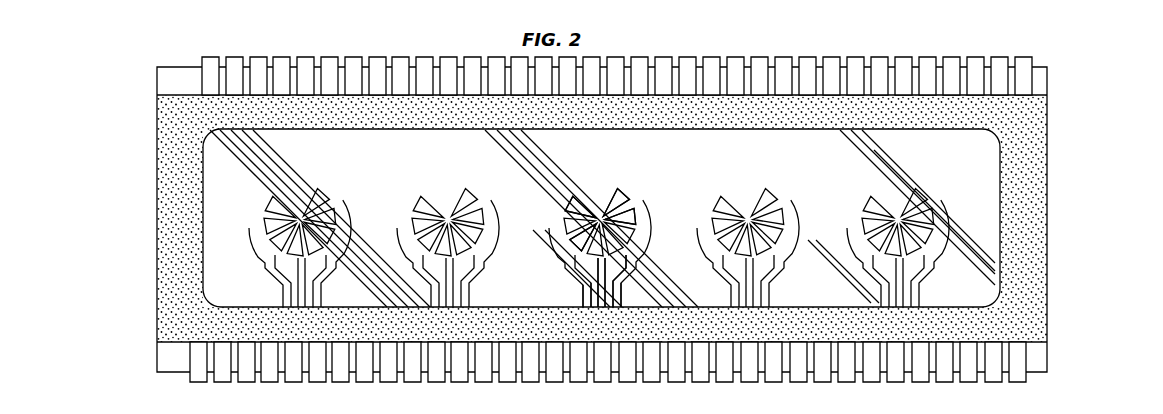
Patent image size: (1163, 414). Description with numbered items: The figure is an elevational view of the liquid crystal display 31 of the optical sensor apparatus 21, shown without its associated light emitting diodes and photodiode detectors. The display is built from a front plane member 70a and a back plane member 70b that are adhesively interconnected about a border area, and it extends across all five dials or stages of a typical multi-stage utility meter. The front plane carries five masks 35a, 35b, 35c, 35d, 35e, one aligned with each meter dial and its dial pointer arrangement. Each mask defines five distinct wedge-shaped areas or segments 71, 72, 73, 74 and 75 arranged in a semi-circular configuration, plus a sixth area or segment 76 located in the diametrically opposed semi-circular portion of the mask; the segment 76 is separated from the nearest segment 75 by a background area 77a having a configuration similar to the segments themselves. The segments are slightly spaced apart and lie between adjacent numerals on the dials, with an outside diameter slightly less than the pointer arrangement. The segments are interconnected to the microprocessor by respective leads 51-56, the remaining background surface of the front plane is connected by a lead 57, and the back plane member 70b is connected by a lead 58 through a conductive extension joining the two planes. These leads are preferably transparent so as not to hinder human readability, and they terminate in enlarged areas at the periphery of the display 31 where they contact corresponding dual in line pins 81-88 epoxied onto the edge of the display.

The optical sensor apparatus 21 is at (1086, 136).
The liquid crystal display 31 is at (1049, 208).
The mask portion 35a is at (319, 193).
The mask portion 35b is at (441, 198).
The mask portion 35c is at (604, 200).
The mask portion 35d is at (738, 200).
The mask portion 35e is at (906, 198).
The leads 51-56 is at (596, 294).
The lead 57 is at (991, 383).
The lead 58 is at (1020, 383).
The front plane member 70a is at (1040, 356).
The back plane member 70b is at (983, 170).
The wedge-shaped area or segment 71 is at (632, 206).
The wedge-shaped area or segment 72 is at (632, 238).
The wedge-shaped area or segment 73 is at (614, 254).
The wedge-shaped area or segment 74 is at (590, 254).
The wedge-shaped area or segment 75 is at (568, 242).
The sixth area or segment 76 is at (573, 192).
The background area 77a is at (566, 217).
The dual in line pins 81-88 is at (338, 393).